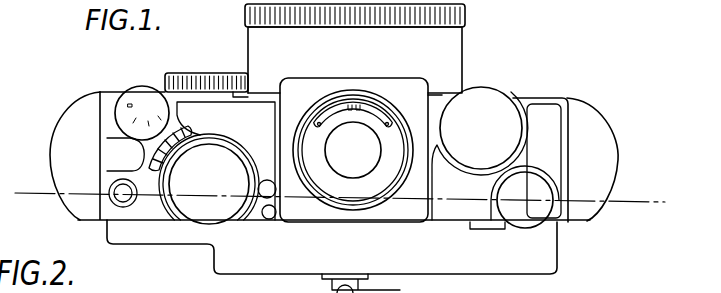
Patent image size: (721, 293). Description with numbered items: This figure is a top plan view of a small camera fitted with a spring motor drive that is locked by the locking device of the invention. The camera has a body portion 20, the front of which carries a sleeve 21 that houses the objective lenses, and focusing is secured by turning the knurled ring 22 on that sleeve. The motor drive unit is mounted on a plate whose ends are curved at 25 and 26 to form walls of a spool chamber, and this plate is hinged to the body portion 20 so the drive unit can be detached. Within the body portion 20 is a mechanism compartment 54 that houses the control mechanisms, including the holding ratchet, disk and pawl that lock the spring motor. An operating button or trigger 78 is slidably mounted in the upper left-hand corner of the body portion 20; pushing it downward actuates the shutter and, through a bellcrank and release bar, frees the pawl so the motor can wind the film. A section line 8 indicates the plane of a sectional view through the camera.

The section line 8- 8 is at (665, 216).
The body portion 20 is at (84, 100).
The sleeve 21 is at (462, 44).
The knurled ring 22 is at (222, 77).
The curved end of plate 25 is at (72, 208).
The curved end of plate 26 is at (586, 214).
The mechanism compartment 54 is at (150, 208).
The operating button or trigger 78 is at (118, 200).